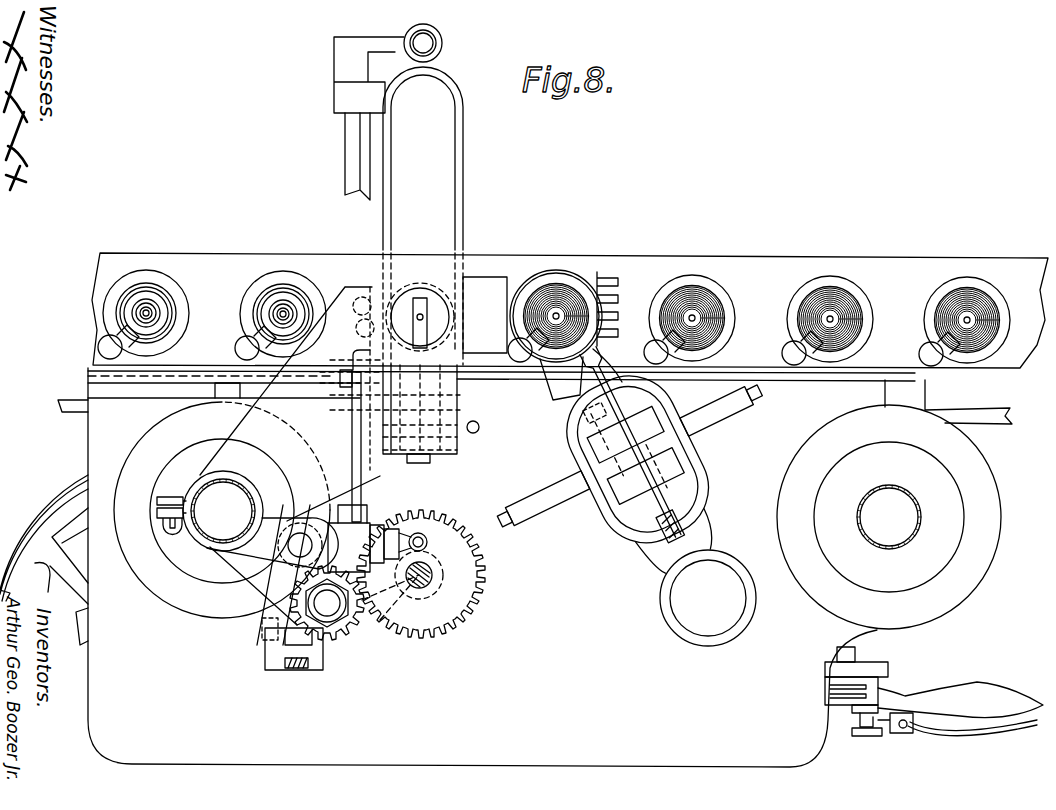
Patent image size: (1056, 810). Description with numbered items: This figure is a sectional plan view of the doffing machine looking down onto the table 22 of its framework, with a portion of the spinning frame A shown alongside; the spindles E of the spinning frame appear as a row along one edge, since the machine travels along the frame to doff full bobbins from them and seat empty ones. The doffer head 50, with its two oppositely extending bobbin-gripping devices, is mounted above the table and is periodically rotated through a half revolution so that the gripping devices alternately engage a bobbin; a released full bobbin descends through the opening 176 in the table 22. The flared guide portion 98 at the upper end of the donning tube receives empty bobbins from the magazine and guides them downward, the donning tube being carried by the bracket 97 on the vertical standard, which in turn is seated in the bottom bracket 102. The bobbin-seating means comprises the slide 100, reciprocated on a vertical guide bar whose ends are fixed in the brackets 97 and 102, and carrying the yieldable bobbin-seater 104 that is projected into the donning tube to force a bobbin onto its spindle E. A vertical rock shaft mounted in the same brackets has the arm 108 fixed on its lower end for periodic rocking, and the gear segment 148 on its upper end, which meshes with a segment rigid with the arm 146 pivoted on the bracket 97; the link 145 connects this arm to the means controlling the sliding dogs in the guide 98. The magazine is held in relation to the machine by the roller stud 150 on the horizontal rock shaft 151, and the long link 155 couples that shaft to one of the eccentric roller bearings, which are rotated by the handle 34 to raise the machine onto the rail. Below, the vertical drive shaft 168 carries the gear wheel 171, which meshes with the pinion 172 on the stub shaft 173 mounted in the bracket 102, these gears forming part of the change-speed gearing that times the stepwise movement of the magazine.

The spinning frame A is at (752, 274).
The spindles E is at (283, 313).
The roller stud 150 is at (441, 44).
The horizontal rock shaft 151 is at (358, 153).
The flared guide portion 98 is at (388, 170).
The slide 100 is at (418, 332).
The yieldable bobbin-seater 104 is at (339, 404).
The table 22 is at (506, 567).
The bracket 97 is at (262, 428).
The bracket 102 is at (213, 580).
The gear segment 148 is at (287, 577).
The link 145 is at (353, 432).
The arm 146 is at (368, 513).
The gear wheel 171 is at (458, 592).
The vertical drive shaft 168 is at (422, 582).
The pinion 172 is at (340, 630).
The stub shaft 173 is at (326, 606).
The arm 108 is at (273, 613).
The long link 155 is at (297, 672).
The doffer head 50 is at (580, 526).
The opening 176 is at (692, 614).
The handle 34 is at (953, 694).